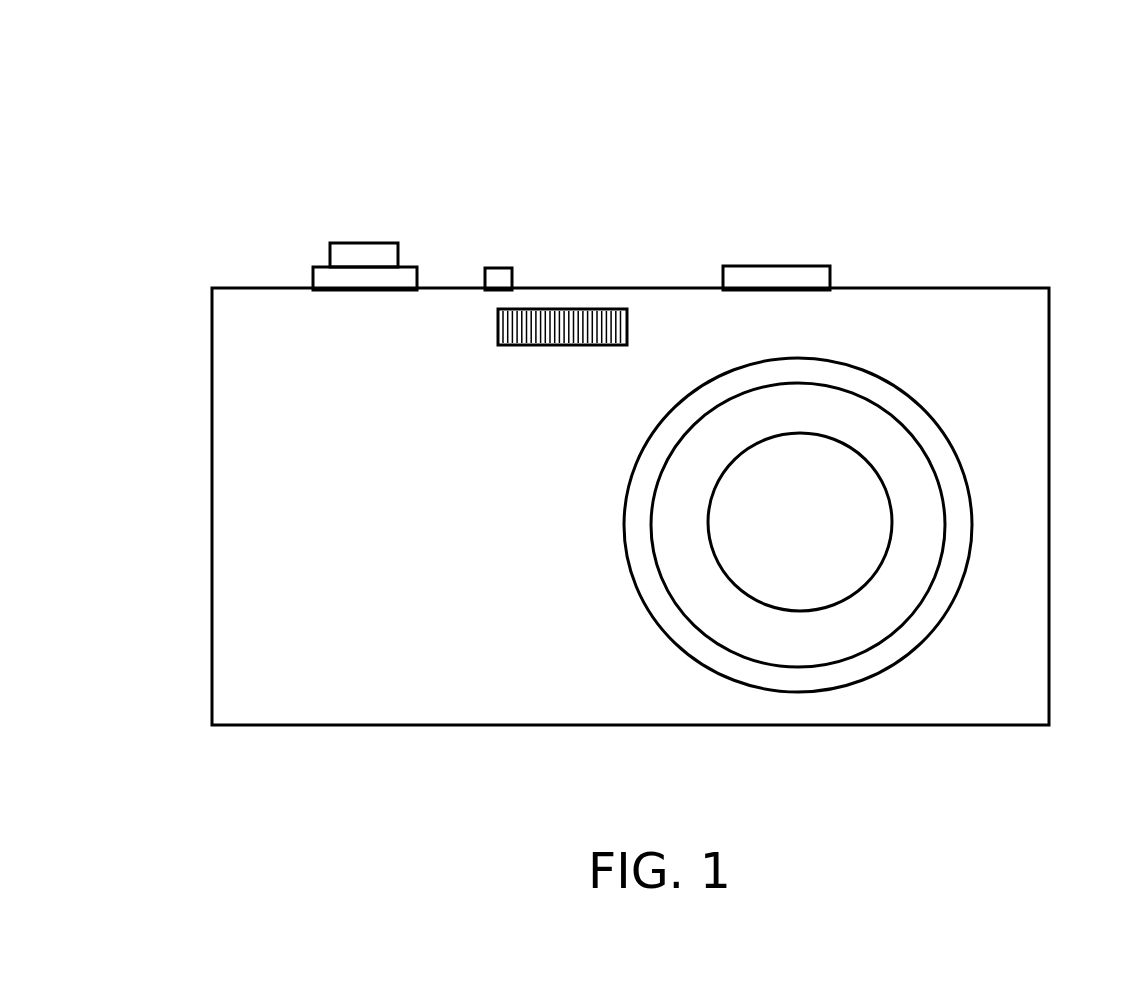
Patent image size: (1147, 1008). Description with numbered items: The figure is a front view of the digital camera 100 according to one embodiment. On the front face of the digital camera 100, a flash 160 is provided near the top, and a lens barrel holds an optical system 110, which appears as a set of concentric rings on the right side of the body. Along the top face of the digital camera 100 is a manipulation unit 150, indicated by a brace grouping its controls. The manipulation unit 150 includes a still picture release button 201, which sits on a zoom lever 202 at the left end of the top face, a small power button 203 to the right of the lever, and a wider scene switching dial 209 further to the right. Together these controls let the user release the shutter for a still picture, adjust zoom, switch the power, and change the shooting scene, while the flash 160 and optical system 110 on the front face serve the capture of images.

The digital camera 100 is at (232, 132).
The optical system 110 is at (845, 542).
The manipulation unit 150 is at (713, 150).
The flash 160 is at (573, 332).
The still picture release button 201 is at (352, 257).
The zoom lever 202 is at (407, 277).
The power button 203 is at (498, 280).
The scene switching dial 209 is at (778, 279).